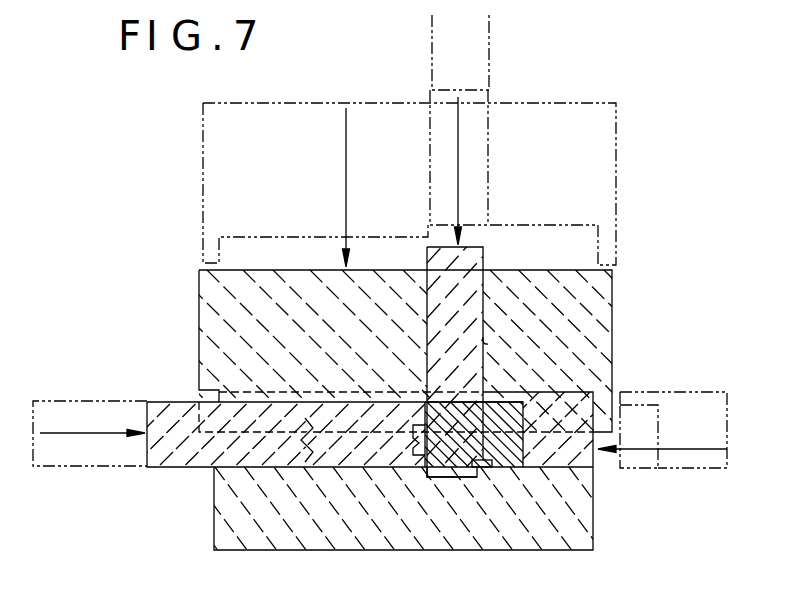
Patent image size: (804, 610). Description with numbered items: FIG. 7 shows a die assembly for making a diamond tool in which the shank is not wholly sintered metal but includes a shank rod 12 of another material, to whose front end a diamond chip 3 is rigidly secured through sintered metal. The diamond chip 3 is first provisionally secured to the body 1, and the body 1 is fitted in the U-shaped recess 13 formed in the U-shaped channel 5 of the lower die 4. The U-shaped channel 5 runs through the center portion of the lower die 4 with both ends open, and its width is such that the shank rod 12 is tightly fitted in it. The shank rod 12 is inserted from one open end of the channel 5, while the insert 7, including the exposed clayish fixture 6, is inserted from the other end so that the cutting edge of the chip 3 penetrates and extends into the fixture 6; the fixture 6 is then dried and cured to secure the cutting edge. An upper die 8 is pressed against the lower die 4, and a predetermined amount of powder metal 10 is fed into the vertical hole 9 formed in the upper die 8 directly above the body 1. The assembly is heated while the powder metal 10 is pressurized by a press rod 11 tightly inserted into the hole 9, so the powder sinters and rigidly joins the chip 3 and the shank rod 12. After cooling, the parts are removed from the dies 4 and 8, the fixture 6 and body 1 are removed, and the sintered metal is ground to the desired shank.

The body 1 is at (413, 478).
The diamond chip 3 is at (473, 470).
The lower die 4 is at (345, 552).
The U-shaped channel 5 is at (262, 470).
The clayish fixture 6 is at (520, 470).
The insert 7 is at (677, 395).
The upper die 8 is at (605, 168).
The vertical hole 9 is at (488, 344).
The powder metal 10 is at (425, 393).
The press rod 11 is at (482, 40).
The shank rod 12 is at (176, 470).
The U-shaped recess 13 is at (445, 478).